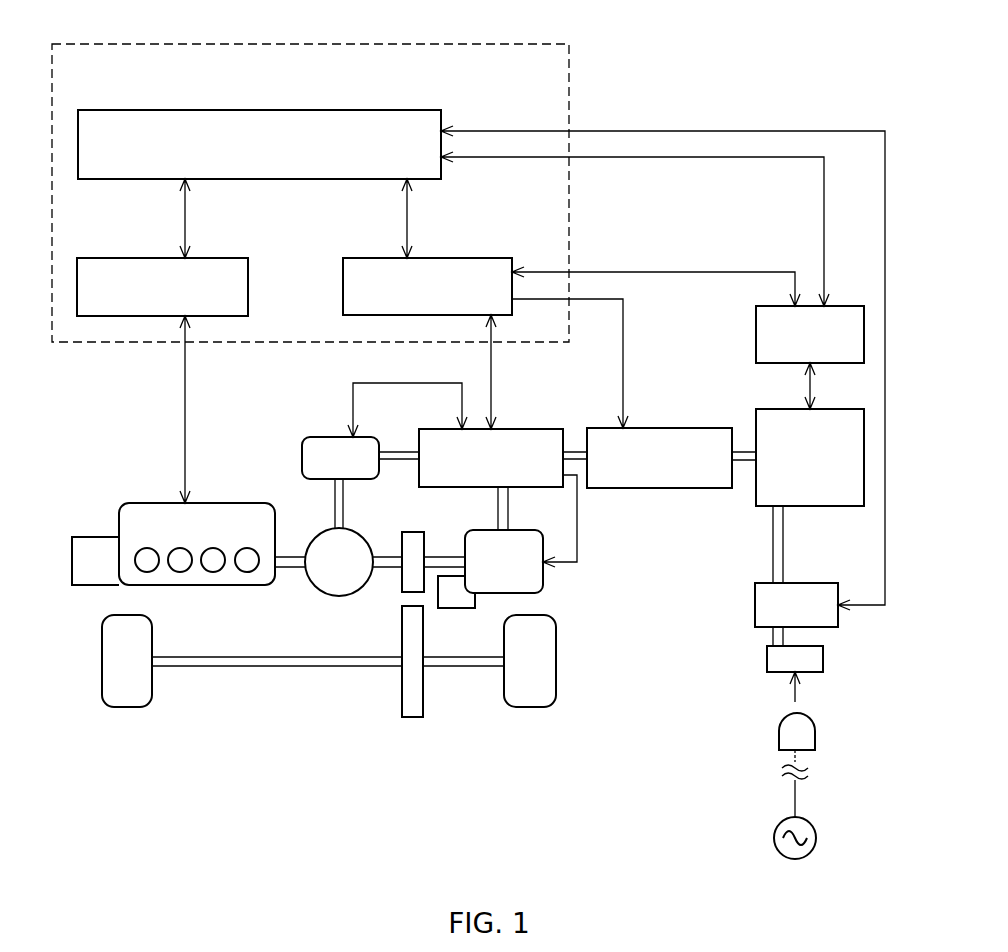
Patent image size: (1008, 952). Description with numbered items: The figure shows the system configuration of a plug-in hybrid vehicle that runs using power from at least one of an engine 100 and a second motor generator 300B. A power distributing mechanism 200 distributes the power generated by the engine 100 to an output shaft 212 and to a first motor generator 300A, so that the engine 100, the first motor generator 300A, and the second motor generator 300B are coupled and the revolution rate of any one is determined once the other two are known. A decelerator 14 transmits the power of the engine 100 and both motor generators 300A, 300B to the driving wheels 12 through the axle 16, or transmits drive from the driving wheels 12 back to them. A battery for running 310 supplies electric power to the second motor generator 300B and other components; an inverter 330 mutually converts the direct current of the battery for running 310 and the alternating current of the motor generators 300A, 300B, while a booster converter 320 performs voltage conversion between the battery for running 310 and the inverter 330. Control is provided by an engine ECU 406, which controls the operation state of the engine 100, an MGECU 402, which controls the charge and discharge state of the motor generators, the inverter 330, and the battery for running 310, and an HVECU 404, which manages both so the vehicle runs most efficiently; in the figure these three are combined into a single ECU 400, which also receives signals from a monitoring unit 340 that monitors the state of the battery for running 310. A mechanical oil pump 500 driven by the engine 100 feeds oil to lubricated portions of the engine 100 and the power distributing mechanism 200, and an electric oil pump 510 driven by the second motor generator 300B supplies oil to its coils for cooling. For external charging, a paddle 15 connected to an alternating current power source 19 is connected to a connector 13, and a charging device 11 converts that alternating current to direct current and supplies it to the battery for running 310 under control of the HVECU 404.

The ECU 400 is at (493, 44).
The HVECU 404 is at (352, 110).
The engine ECU 406 is at (135, 258).
The MGECU 402 is at (450, 258).
The monitoring unit 340 is at (756, 318).
The booster converter 320 is at (682, 428).
The inverter 330 is at (525, 429).
The battery for running 310 is at (812, 506).
The first motor generator MG(1) 300A is at (308, 437).
The second motor generator MG(2) 300B is at (543, 585).
The power distributing mechanism 200 is at (315, 535).
The output shaft 212 is at (385, 556).
The electric oil pump 510 is at (460, 610).
The engine 100 is at (197, 585).
The mechanical oil pump 500 is at (90, 537).
The drive shaft 16 is at (265, 668).
The driving wheels 12 is at (120, 710).
The decelerator 14 is at (425, 697).
The charging device 11 is at (755, 605).
The connector 13 is at (767, 657).
The paddle 15 is at (779, 735).
The alternating current power source 19 is at (779, 830).